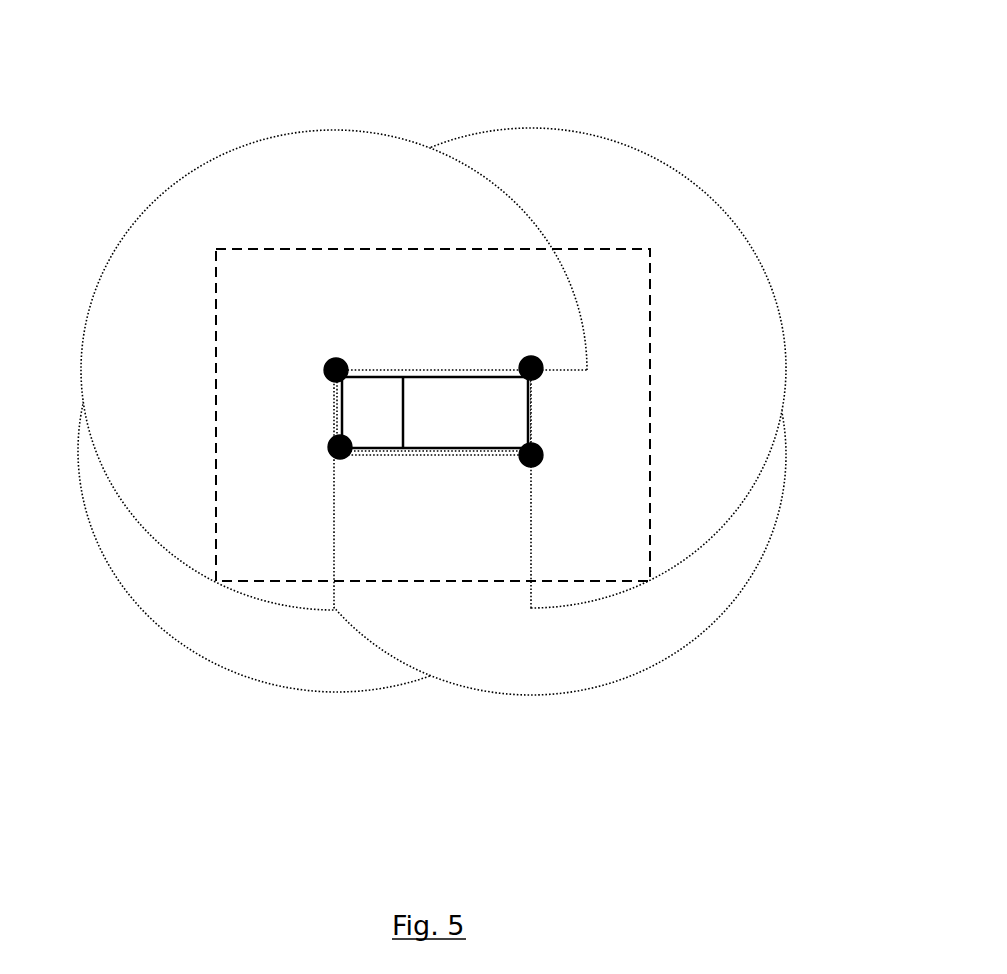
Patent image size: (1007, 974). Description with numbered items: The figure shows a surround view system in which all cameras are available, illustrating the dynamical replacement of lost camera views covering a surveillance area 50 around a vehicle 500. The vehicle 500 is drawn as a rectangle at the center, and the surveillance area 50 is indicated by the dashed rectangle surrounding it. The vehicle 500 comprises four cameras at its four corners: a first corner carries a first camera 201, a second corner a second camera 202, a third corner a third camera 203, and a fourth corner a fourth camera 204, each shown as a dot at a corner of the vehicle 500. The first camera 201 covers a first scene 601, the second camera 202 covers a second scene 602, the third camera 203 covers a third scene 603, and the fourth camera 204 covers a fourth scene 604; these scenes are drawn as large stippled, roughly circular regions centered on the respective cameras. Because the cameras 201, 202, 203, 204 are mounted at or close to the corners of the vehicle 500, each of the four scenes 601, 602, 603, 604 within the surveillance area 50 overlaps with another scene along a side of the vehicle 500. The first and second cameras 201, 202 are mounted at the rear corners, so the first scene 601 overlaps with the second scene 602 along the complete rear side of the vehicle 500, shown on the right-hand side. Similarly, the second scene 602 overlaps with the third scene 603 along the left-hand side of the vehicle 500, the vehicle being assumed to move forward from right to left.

The surveillance area 50 is at (388, 248).
The vehicle 500 is at (480, 435).
The first camera 201 is at (533, 365).
The second camera 202 is at (533, 456).
The third camera 203 is at (340, 450).
The fourth camera 204 is at (333, 368).
The first scene 601 is at (568, 130).
The second scene 602 is at (645, 668).
The third scene 603 is at (218, 670).
The fourth scene 604 is at (292, 130).